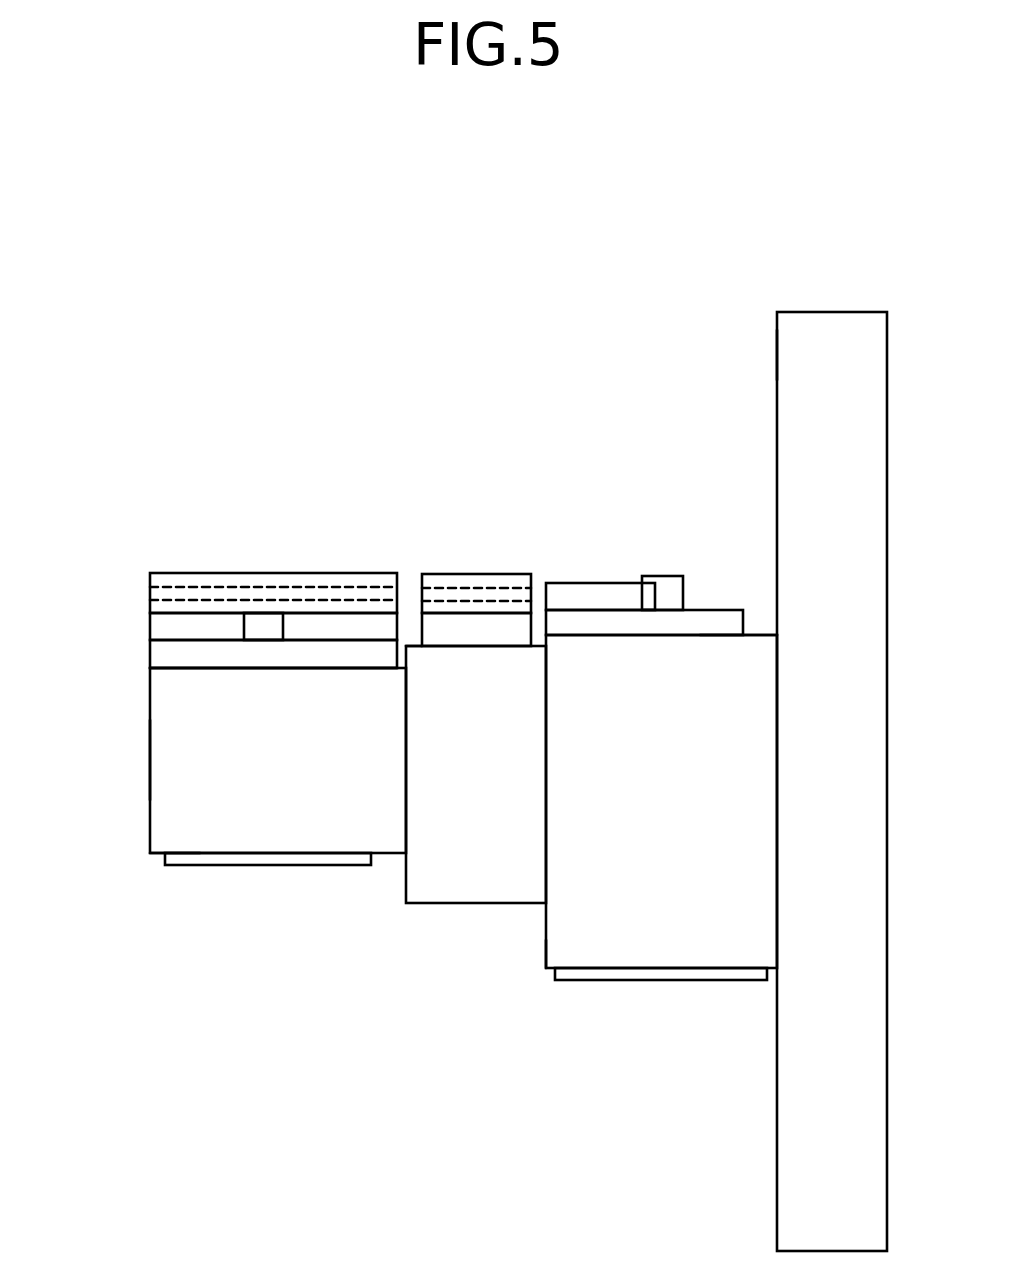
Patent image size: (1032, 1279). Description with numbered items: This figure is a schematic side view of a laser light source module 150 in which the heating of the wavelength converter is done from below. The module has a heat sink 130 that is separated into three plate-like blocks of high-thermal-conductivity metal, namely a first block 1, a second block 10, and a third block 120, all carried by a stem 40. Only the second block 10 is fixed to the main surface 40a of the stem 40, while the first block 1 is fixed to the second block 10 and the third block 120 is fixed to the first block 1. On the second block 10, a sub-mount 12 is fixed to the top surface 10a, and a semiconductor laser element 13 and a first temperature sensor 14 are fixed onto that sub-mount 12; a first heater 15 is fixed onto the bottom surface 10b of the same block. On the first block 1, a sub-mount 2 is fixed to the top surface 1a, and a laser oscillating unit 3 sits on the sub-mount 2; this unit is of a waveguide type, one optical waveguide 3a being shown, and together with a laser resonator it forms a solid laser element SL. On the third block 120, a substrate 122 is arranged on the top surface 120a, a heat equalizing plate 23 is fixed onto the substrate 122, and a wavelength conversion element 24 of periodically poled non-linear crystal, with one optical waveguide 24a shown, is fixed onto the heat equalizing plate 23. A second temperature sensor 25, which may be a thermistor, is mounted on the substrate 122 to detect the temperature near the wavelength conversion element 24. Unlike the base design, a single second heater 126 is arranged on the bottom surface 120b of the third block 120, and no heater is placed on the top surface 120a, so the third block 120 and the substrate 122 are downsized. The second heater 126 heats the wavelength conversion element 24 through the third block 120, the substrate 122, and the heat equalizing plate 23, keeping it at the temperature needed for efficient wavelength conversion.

The laser light source module 150 is at (725, 232).
The stem 40 is at (838, 305).
The main surface 40a is at (777, 352).
The second block 10 is at (560, 924).
The top surface 10a is at (746, 633).
The bottom surface 10b is at (548, 970).
The first heater 15 is at (688, 980).
The sub-mount 12 is at (643, 622).
The semiconductor laser element 13 is at (577, 583).
The first temperature sensor 14 is at (660, 576).
The first block 1 is at (446, 890).
The top surface 1a is at (408, 644).
The sub-mount 2 is at (475, 628).
The laser oscillating unit 3 is at (442, 565).
The solid laser element SL is at (472, 532).
The optical waveguide 3a is at (503, 600).
The third block 120 is at (288, 840).
The heat sink 130 is at (138, 754).
The second heater 126 is at (205, 862).
The bottom surface 120b is at (152, 856).
The top surface 120a is at (168, 666).
The substrate 122 is at (318, 652).
The heat equalizing plate 23 is at (175, 626).
The second temperature sensor 25 is at (264, 612).
The wavelength conversion element 24 is at (190, 563).
The optical waveguide 24a is at (338, 600).